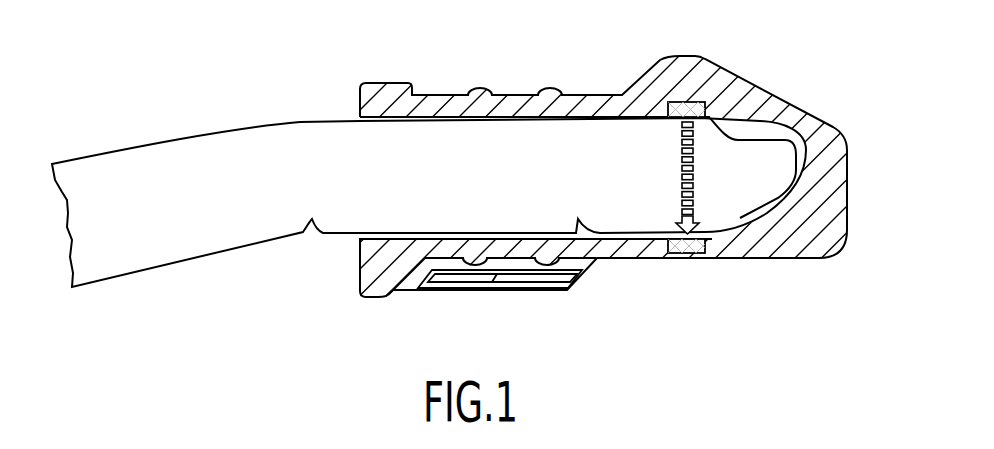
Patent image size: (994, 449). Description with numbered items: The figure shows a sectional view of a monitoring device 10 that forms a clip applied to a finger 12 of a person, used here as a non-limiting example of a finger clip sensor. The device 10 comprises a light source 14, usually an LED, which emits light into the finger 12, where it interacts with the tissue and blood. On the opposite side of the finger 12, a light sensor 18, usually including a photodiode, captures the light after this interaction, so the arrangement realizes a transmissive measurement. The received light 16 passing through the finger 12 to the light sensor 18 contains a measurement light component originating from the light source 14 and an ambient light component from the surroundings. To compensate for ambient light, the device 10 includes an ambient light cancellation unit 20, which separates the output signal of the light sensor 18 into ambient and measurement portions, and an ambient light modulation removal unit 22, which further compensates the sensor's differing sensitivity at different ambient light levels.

The monitoring device 10 is at (760, 101).
The finger 12 is at (182, 133).
The light source 14 is at (690, 108).
The received light 16 is at (693, 157).
The light sensor 18 is at (687, 254).
The ambient light cancellation unit 20 is at (455, 288).
The ambient light modulation removal unit 22 is at (527, 288).